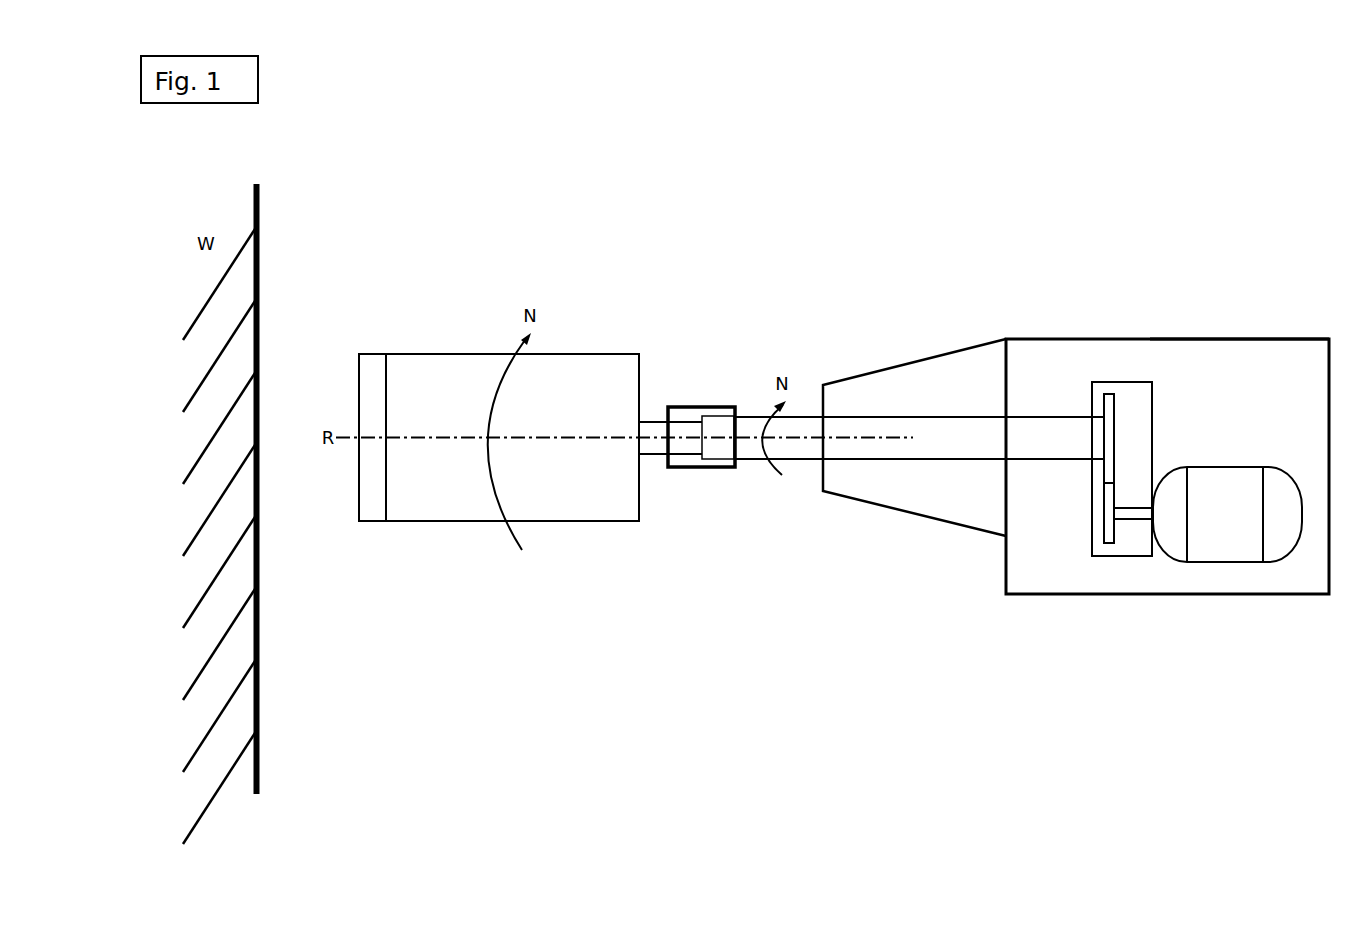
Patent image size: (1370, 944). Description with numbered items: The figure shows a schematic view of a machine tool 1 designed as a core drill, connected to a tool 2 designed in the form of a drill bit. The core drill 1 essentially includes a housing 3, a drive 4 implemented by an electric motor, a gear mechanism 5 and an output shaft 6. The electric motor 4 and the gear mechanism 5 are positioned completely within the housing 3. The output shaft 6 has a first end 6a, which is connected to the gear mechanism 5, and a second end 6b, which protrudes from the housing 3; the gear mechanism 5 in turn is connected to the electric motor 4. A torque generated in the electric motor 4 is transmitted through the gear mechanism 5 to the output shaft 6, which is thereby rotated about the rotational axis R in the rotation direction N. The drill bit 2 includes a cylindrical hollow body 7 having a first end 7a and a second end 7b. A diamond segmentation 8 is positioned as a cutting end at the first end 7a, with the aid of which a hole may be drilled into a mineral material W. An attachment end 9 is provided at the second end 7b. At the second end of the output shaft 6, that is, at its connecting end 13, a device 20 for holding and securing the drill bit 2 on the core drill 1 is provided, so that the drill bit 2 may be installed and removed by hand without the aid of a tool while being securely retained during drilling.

The machine tool 1 is at (1041, 572).
The tool 2 is at (475, 365).
The housing 3 is at (1287, 338).
The drive 4 is at (1223, 550).
The gear mechanism 5 is at (1132, 391).
The output shaft 6 is at (800, 450).
The first end 6a is at (1085, 422).
The second end 6b is at (712, 453).
The cylindrical hollow body 7 is at (459, 512).
The first end 7a is at (388, 358).
The second end 7b is at (638, 490).
The diamond segmentation 8 is at (372, 507).
The attachment end 9 is at (690, 443).
The connecting end 13 is at (722, 420).
The device 20 is at (695, 395).